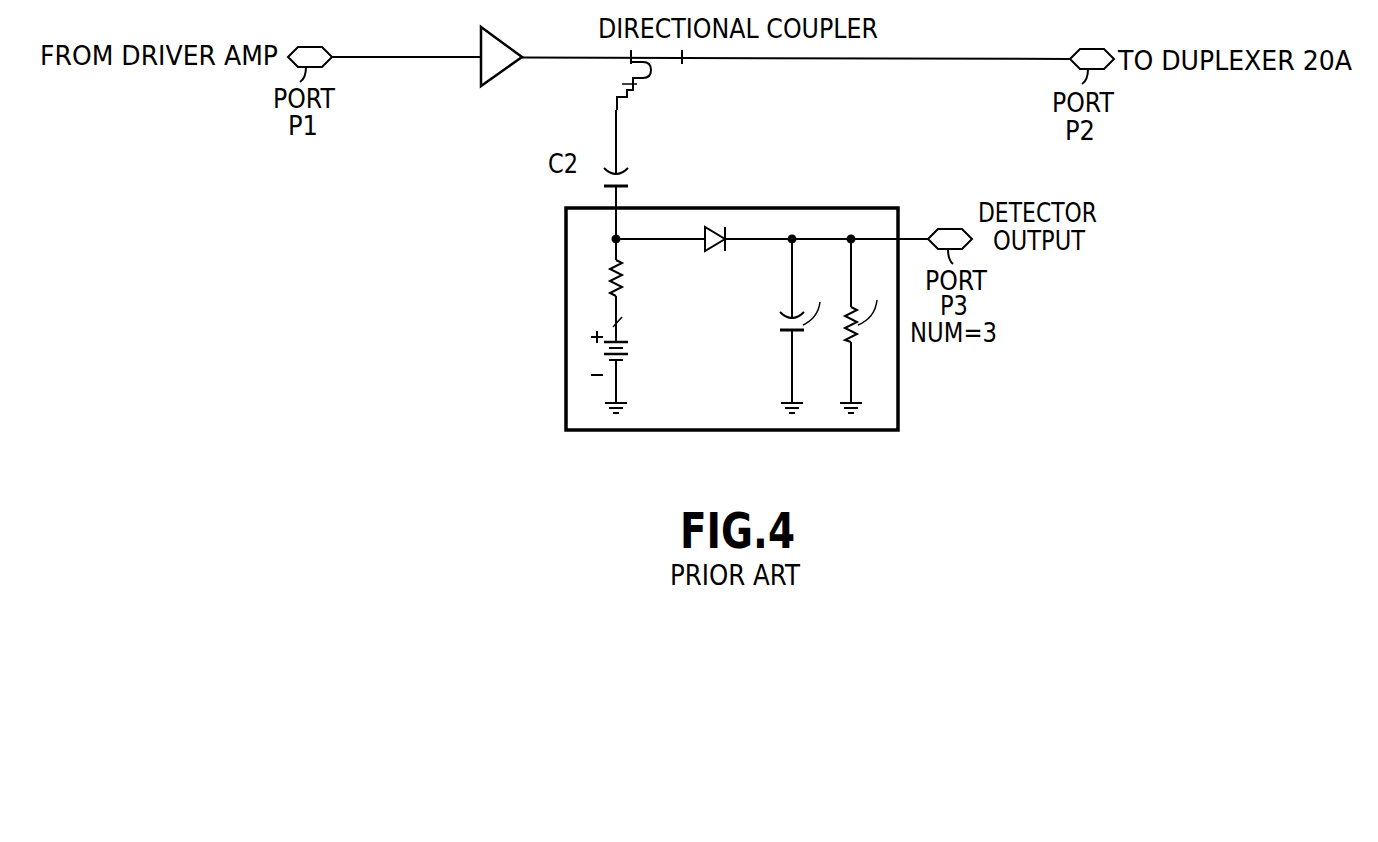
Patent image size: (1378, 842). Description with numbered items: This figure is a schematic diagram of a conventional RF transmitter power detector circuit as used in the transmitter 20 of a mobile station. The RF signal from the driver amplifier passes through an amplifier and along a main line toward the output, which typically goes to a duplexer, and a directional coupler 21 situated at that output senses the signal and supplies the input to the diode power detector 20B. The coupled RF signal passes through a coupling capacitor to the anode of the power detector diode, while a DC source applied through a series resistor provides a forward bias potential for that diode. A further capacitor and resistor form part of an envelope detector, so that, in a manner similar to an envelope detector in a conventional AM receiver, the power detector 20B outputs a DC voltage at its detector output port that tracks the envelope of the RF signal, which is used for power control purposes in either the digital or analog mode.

The transmitter 20 is at (482, 85).
The directional coupler 21 is at (647, 77).
The diode power detector 20B is at (810, 197).